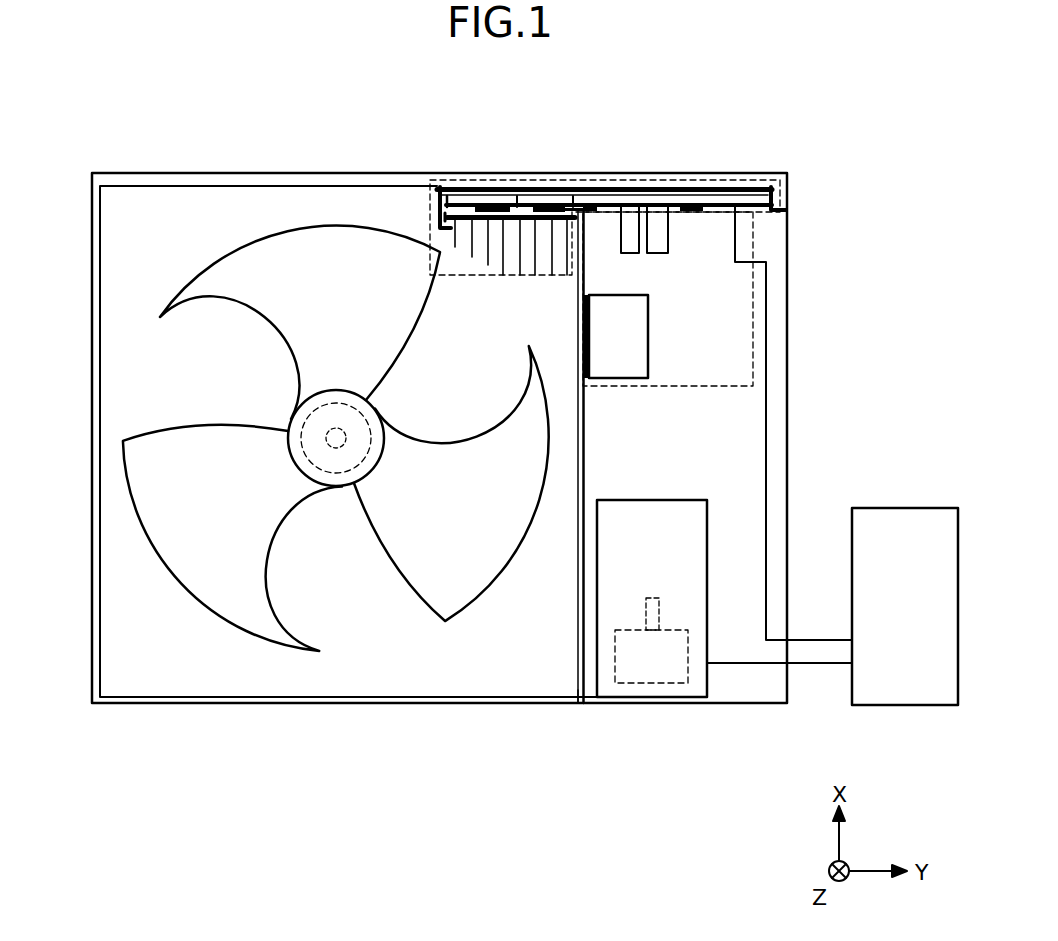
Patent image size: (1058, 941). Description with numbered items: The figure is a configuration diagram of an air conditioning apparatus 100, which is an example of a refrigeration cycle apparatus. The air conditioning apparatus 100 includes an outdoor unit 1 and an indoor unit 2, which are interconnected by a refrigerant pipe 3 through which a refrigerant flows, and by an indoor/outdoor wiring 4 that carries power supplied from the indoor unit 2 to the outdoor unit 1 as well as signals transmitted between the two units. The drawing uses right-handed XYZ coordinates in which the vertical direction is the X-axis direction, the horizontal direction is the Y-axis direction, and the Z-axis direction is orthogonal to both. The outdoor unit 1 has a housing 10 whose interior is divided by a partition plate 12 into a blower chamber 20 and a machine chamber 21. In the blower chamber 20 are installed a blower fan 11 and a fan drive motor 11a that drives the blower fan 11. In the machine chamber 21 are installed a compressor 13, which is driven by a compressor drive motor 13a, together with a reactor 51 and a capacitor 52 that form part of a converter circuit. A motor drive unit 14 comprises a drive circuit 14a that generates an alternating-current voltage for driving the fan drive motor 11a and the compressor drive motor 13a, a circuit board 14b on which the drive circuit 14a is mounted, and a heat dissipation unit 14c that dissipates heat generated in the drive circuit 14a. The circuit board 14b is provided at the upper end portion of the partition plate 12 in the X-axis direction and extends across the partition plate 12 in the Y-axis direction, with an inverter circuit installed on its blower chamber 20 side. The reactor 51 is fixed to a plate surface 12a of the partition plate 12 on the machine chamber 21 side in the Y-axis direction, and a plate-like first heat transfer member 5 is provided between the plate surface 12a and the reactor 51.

The air conditioning apparatus 100 is at (468, 98).
The outdoor unit 1 is at (787, 423).
The indoor unit 2 is at (922, 508).
The refrigerant pipe 3 is at (818, 665).
The indoor/outdoor wiring 4 is at (818, 640).
The first heat transfer member 5 is at (580, 306).
The housing 10 is at (225, 172).
The blower fan 11 is at (290, 420).
The fan drive motor 11a is at (348, 471).
The partition plate 12 is at (578, 600).
The plate surface 12a is at (585, 687).
The compressor 13 is at (670, 500).
The compressor drive motor 13a is at (670, 683).
The motor drive unit 14 is at (673, 173).
The drive circuit 14a is at (500, 173).
The circuit board 14b is at (733, 173).
The heat dissipation unit 14c is at (455, 173).
The blower chamber 20 is at (155, 290).
The machine chamber 21 is at (716, 254).
The reactor 51 is at (649, 345).
The capacitor 52 is at (631, 254).